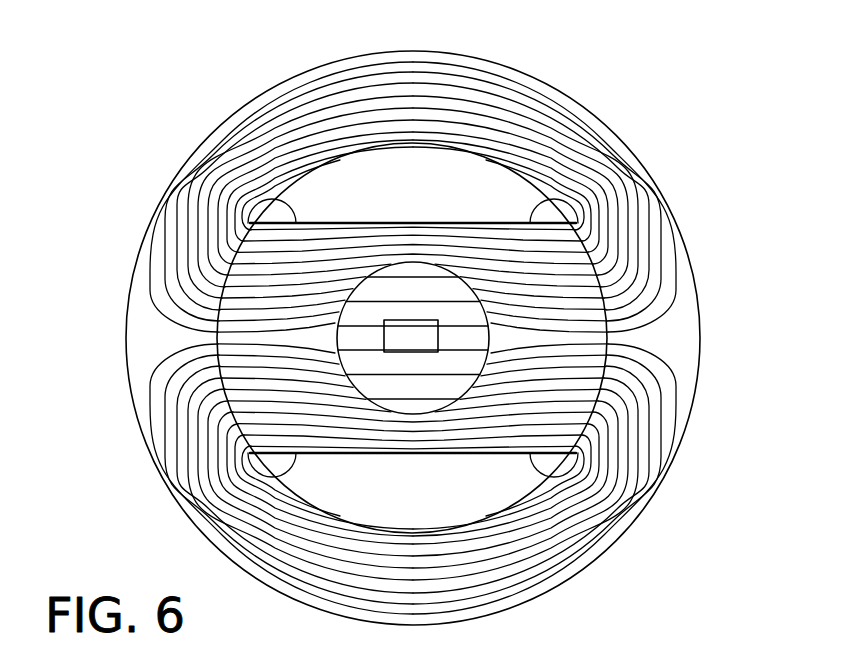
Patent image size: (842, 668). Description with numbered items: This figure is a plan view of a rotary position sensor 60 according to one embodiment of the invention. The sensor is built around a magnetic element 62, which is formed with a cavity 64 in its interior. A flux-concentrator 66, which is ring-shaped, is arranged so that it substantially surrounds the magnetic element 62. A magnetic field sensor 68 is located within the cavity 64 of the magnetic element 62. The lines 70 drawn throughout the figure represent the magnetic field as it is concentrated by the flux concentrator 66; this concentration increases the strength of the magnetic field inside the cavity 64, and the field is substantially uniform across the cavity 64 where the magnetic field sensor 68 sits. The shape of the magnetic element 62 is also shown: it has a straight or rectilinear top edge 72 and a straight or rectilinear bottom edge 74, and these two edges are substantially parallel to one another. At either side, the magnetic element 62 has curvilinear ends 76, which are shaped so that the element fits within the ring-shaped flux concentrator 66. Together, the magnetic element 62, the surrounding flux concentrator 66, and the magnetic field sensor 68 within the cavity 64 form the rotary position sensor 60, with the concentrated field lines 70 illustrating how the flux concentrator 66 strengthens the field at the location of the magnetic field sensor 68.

The rotary position sensor 60 is at (156, 107).
The magnetic element 62 is at (535, 205).
The cavity 64 is at (443, 265).
The flux-concentrator 66 is at (706, 369).
The magnetic field sensor 68 is at (415, 318).
The lines 70 is at (660, 362).
The top edge 72 is at (292, 212).
The bottom edge 74 is at (272, 452).
The curvilinear ends 76 is at (220, 373).